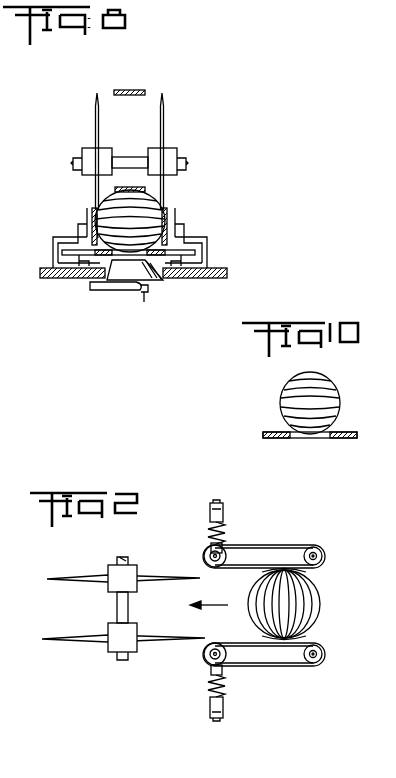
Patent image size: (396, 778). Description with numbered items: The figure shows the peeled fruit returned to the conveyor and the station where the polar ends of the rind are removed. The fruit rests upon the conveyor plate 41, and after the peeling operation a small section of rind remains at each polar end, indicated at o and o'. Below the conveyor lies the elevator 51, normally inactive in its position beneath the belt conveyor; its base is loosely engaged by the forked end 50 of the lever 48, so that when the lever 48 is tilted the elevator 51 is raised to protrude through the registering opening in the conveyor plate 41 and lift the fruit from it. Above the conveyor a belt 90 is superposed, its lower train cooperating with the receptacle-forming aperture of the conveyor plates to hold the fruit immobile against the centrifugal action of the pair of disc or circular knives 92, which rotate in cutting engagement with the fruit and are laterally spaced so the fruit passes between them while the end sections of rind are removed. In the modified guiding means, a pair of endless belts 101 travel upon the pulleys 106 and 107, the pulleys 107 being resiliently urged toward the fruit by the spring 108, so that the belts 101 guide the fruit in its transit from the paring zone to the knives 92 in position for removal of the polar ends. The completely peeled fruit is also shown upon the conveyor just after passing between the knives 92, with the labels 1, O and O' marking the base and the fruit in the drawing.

In FIG. 8, the base plate 1 is at (204, 278).
In FIG. 8, the conveyor plate 41 is at (165, 252).
In FIG. 10, the conveyor plate 41 is at (350, 439).
In FIG. 8, the lever 48 is at (98, 291).
In FIG. 8, the forked end 50 is at (144, 302).
In FIG. 8, the elevator 51 is at (150, 281).
In FIG. 8, the belt 90 is at (145, 90).
In FIG. 8, the disc or circular knives 92 is at (164, 126).
In FIG. 9, the disc or circular knives 92 is at (82, 636).
In FIG. 9, the endless belts 101 is at (241, 569).
In FIG. 9, the pulleys 106 is at (325, 654).
In FIG. 9, the pulleys 107 is at (208, 660).
In FIG. 9, the spring 108 is at (224, 688).
In FIG. 8, the orange (fruit) O is at (118, 216).
In FIG. 10, the orange (fruit) O is at (325, 402).
In FIG. 9, the orange (fruit) O is at (300, 604).
In FIG. 8, the fruit side O' is at (80, 216).
In FIG. 9, the section of rind o is at (303, 577).
In FIG. 9, the section of rind o' is at (302, 636).